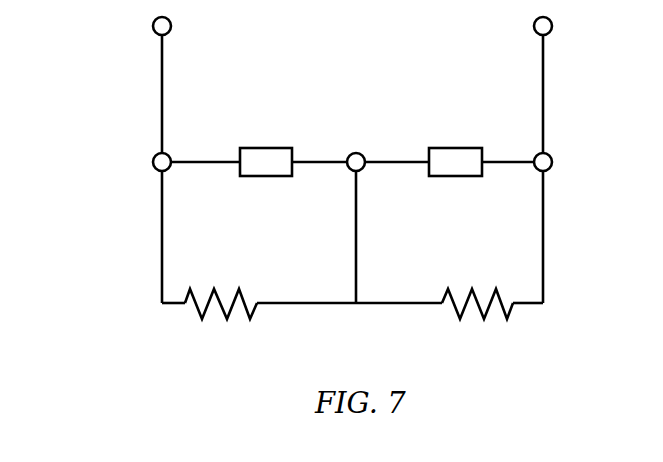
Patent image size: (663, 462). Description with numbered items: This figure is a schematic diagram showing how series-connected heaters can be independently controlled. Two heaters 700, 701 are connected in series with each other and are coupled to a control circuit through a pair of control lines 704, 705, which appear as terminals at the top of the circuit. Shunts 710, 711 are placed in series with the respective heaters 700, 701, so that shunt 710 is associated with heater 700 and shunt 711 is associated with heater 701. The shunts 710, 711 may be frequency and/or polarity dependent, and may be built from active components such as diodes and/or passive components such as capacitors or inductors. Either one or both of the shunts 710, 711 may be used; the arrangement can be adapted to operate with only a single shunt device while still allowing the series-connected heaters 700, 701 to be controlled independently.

The control line 704 is at (155, 27).
The control line 705 is at (536, 27).
The shunt 710 is at (270, 147).
The shunt 711 is at (443, 147).
The heater 700 is at (220, 318).
The heater 701 is at (483, 318).